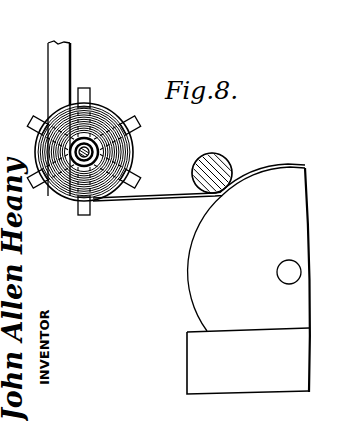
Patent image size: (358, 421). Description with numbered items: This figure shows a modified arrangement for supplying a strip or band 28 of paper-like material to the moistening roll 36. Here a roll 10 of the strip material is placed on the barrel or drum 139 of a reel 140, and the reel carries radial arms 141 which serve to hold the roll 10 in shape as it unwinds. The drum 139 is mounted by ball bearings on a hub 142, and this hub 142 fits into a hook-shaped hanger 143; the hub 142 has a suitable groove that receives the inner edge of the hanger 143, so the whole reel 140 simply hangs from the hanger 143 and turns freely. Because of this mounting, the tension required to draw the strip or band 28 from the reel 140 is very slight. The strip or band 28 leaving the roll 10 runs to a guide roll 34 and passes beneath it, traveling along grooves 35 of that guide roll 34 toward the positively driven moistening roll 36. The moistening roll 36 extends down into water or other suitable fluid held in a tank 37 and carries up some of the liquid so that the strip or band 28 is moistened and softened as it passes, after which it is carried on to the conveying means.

The roll 10 is at (134, 164).
The strip or band 28 is at (162, 199).
The guide roll 34 is at (220, 170).
The grooves 35 is at (207, 160).
The moistening roll 36 is at (292, 225).
The tank 37 is at (192, 358).
The barrel or drum 139 is at (100, 152).
The reel 140 is at (44, 189).
The radial arms 141 is at (88, 96).
The hub 142 is at (70, 148).
The hook-shaped hanger 143 is at (58, 72).